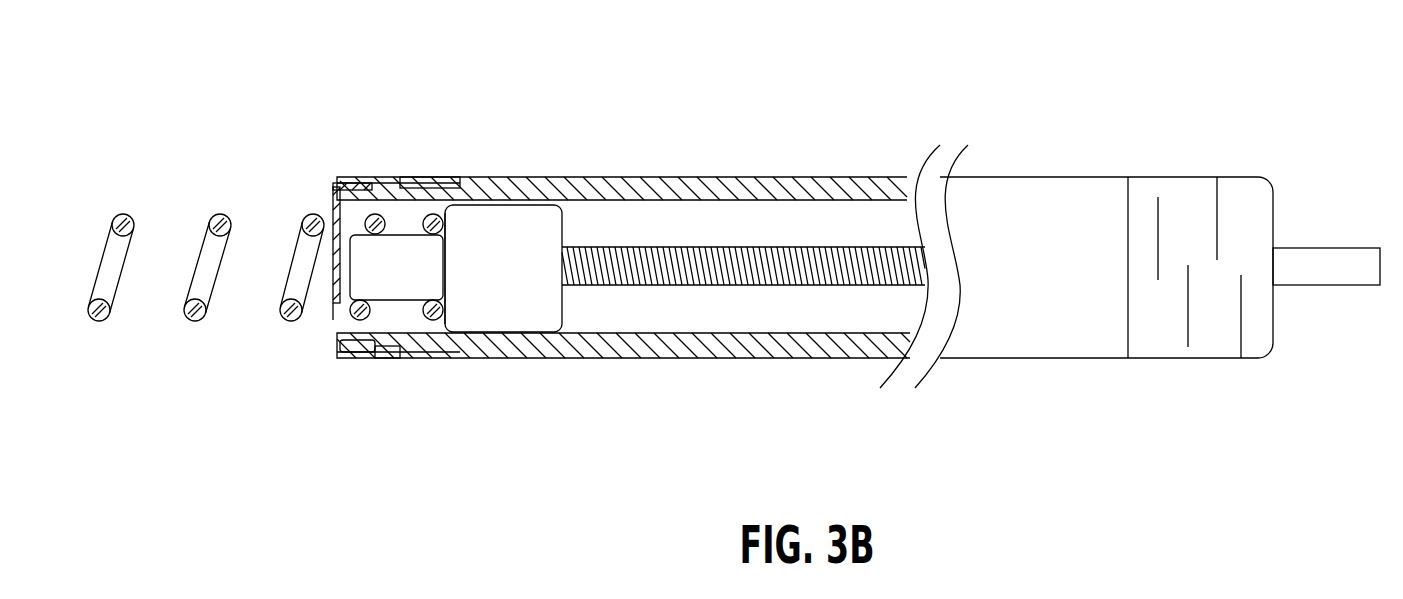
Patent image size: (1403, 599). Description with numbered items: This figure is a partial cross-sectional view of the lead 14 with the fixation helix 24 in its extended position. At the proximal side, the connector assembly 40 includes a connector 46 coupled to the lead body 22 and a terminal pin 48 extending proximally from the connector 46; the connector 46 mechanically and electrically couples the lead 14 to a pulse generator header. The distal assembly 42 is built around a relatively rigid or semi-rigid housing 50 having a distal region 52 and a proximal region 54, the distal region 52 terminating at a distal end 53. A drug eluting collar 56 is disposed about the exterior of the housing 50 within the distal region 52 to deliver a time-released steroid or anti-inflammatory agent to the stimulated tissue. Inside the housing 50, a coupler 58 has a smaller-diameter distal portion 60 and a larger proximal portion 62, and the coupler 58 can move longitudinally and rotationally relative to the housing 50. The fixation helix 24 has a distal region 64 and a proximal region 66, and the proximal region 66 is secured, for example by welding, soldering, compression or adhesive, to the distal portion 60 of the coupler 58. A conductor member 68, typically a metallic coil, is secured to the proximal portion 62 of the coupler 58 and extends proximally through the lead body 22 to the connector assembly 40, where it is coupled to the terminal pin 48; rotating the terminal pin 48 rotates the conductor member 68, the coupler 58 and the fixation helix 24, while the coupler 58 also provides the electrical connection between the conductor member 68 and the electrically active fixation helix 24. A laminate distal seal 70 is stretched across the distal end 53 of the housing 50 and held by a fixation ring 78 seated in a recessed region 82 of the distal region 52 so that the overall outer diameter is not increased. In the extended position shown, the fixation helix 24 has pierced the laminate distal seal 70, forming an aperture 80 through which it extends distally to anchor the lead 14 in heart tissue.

The lead 14 is at (652, 259).
The lead body 22 is at (1010, 187).
The fixation helix 24 is at (198, 290).
The connector assembly 40 is at (1160, 263).
The distal assembly 42 is at (341, 162).
The connector 46 is at (1225, 340).
The terminal pin 48 is at (1328, 278).
The housing 50 is at (518, 178).
The distal region 52 is at (357, 418).
The distal end 53 is at (355, 352).
The proximal region 54 is at (808, 386).
The drug eluting collar 56 is at (452, 178).
The coupler 58 is at (465, 313).
The distal portion 60 is at (414, 285).
The proximal portion 62 is at (522, 323).
The distal region 64 is at (102, 273).
The proximal region 66 is at (378, 214).
The conductor member 68 is at (828, 253).
The laminate distal seal 70 is at (332, 213).
The fixation ring 78 is at (378, 103).
The aperture 80 is at (327, 318).
The recessed region 82 is at (370, 357).